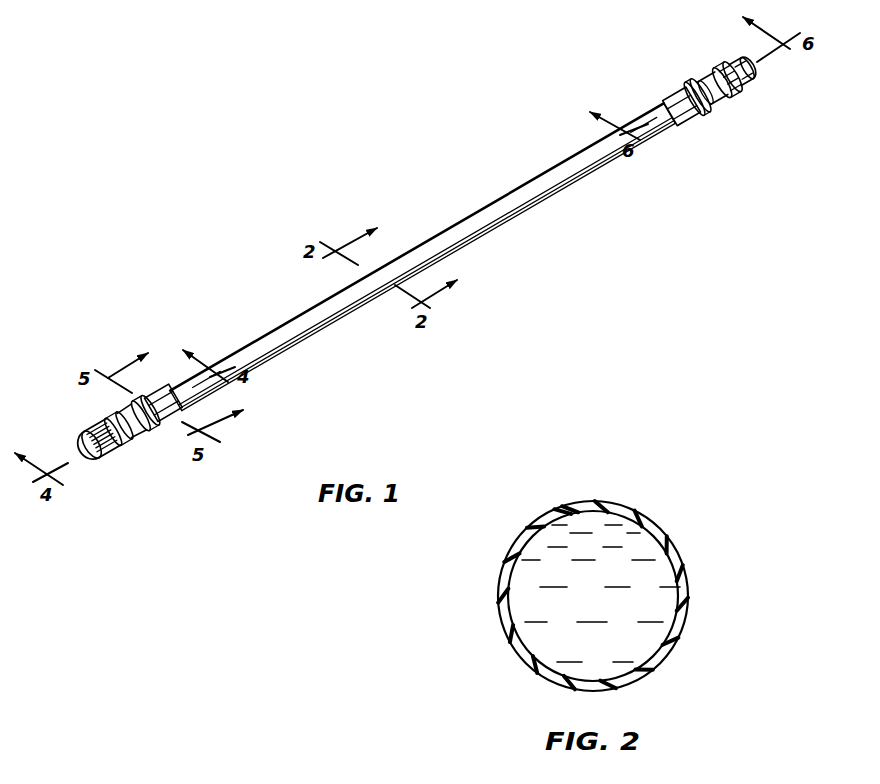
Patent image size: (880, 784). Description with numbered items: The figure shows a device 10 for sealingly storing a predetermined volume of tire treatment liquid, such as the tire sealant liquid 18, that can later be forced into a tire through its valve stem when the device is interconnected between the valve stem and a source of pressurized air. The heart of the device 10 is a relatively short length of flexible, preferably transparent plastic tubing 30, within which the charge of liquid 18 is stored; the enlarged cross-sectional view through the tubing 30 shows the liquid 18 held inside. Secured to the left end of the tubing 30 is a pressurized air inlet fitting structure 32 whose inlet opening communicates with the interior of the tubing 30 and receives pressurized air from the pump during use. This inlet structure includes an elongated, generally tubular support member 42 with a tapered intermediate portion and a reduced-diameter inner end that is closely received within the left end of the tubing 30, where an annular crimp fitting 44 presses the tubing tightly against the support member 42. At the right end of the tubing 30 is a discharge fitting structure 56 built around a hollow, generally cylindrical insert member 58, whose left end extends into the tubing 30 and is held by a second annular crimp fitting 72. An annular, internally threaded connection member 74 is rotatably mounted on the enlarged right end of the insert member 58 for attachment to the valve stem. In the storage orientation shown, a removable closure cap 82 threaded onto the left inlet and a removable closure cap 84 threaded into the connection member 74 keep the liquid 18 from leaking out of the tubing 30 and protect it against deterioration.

In FIG. 1, the device 10 is at (408, 263).
In FIG. 2, the device 10 is at (561, 596).
In FIG. 2, the tire sealant liquid 18 is at (550, 622).
In FIG. 1, the plastic tubing 30 is at (480, 236).
In FIG. 2, the plastic tubing 30 is at (662, 533).
In FIG. 1, the pressurized air inlet fitting structure 32 is at (141, 450).
In FIG. 1, the support member 42 is at (120, 411).
In FIG. 1, the annular crimp fitting 44 is at (162, 424).
In FIG. 1, the discharge fitting structure 56 is at (720, 108).
In FIG. 1, the insert member 58 is at (699, 80).
In FIG. 1, the annular crimp fitting 72 is at (665, 92).
In FIG. 1, the connection member 74 is at (720, 64).
In FIG. 1, the removable closure cap 82 is at (94, 429).
In FIG. 1, the removable closure cap 84 is at (742, 87).